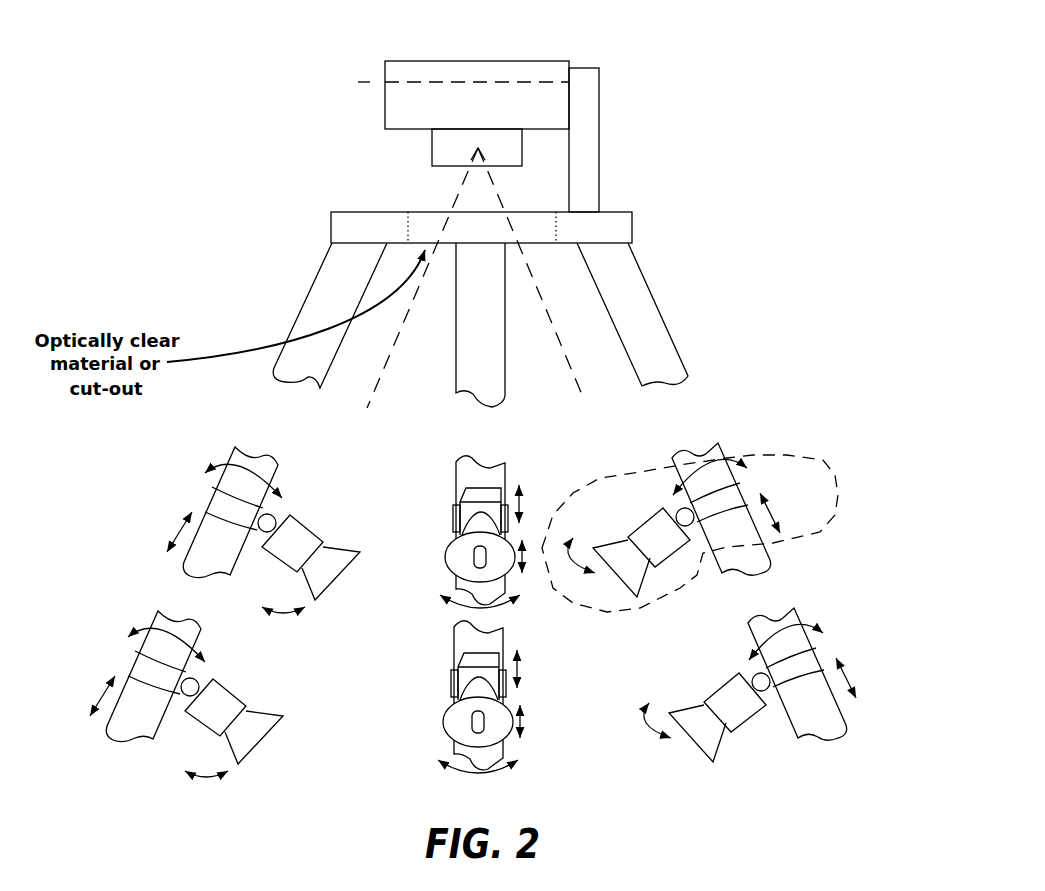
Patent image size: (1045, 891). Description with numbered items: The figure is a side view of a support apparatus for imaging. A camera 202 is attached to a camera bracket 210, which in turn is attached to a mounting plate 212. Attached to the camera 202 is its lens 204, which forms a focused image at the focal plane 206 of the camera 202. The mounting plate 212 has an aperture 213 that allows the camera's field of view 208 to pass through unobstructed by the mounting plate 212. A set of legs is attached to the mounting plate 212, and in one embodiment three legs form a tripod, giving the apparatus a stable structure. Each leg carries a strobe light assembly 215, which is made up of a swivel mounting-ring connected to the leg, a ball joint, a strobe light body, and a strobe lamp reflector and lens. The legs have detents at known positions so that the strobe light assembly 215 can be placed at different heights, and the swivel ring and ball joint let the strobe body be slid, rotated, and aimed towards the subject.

The camera 202 is at (534, 60).
The lens 204 is at (432, 142).
The focal plane 206 is at (365, 78).
The field of view 208 is at (453, 202).
The camera bracket 210 is at (599, 103).
The mounting plate 212 is at (615, 212).
The aperture 213 is at (556, 230).
The strobe light assembly 215 is at (760, 453).